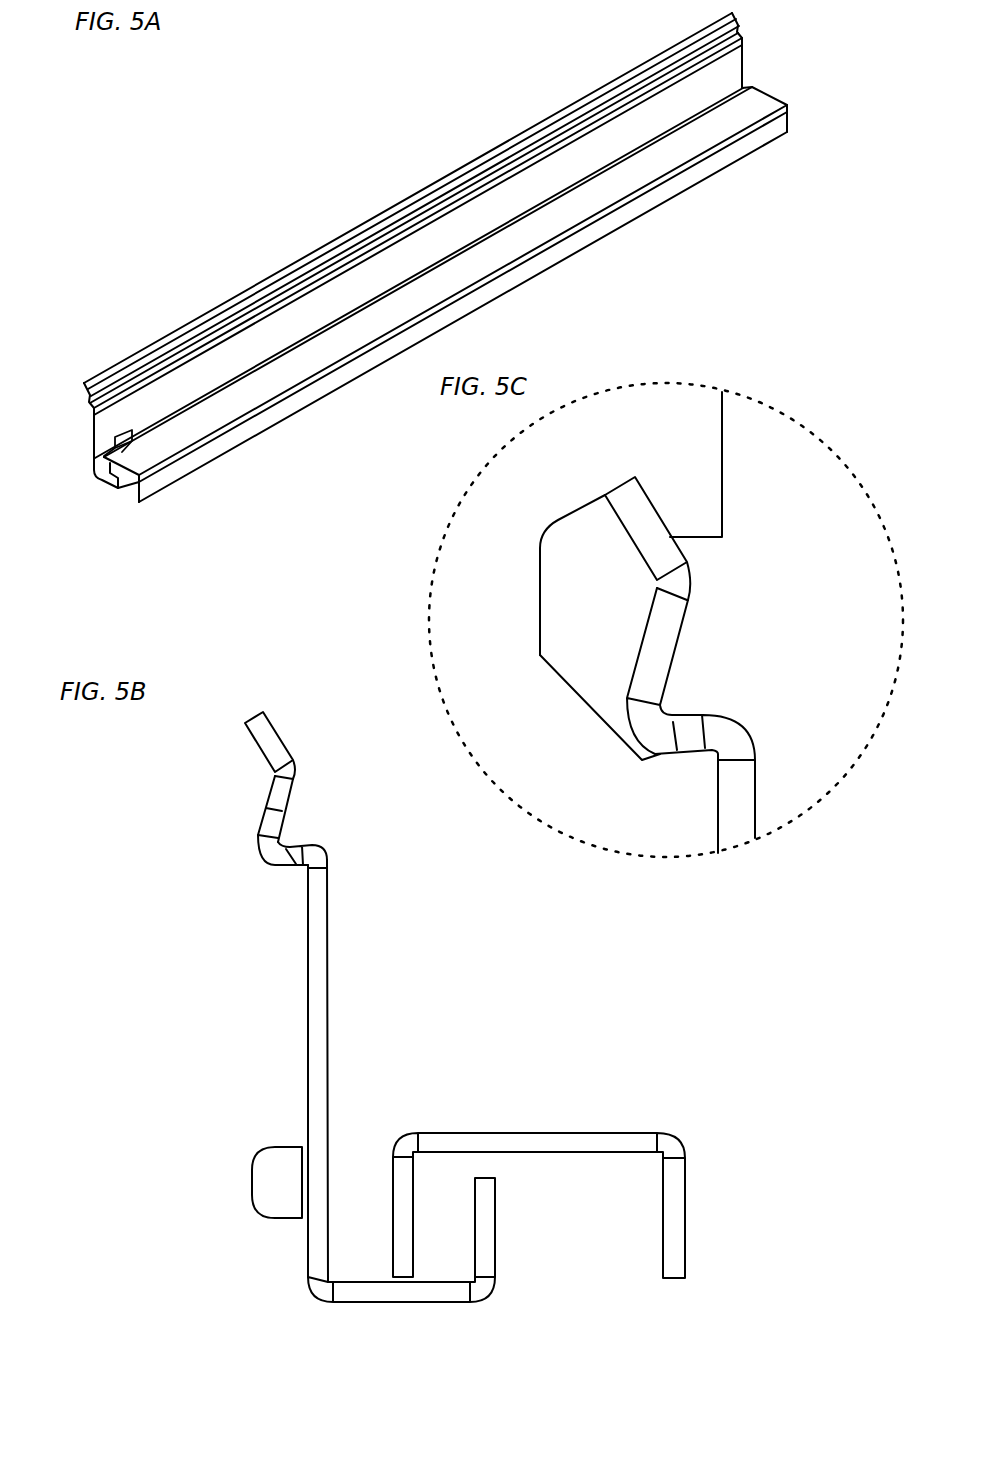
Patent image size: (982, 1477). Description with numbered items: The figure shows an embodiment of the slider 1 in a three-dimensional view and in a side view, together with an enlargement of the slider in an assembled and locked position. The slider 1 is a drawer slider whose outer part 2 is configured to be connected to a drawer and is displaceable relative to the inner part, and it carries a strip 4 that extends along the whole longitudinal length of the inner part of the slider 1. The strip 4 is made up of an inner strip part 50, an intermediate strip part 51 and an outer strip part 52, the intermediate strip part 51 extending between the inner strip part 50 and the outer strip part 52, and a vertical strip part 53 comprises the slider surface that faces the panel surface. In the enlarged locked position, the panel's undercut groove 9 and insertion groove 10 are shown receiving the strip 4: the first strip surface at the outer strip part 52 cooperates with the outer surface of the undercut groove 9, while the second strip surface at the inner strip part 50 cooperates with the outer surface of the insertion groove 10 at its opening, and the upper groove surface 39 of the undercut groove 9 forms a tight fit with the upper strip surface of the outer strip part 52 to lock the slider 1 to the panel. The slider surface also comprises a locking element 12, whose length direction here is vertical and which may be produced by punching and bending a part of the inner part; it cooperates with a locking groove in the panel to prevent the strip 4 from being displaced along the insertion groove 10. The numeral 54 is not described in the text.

In FIG. 5A, the slider 1 is at (350, 163).
In FIG. 5B, the slider 1 is at (486, 951).
In FIG. 5C, the slider 1 is at (745, 654).
In FIG. 5B, the outer part 2 is at (678, 1215).
In FIG. 5B, the strip 4 is at (327, 1045).
In FIG. 5C, the undercut groove 9 is at (585, 548).
In FIG. 5C, the insertion groove 10 is at (610, 678).
In FIG. 5A, the locking element 12 is at (92, 440).
In FIG. 5B, the locking element 12 is at (270, 1170).
In FIG. 5C, the upper groove surface 39 is at (625, 480).
In FIG. 5B, the inner strip part 50 is at (292, 864).
In FIG. 5B, the intermediate strip part 51 is at (265, 808).
In FIG. 5B, the outer strip part 52 is at (268, 745).
In FIG. 5B, the vertical strip part 53 is at (318, 1005).
In FIG. 5B, the bottom hook portion 54 is at (368, 1335).